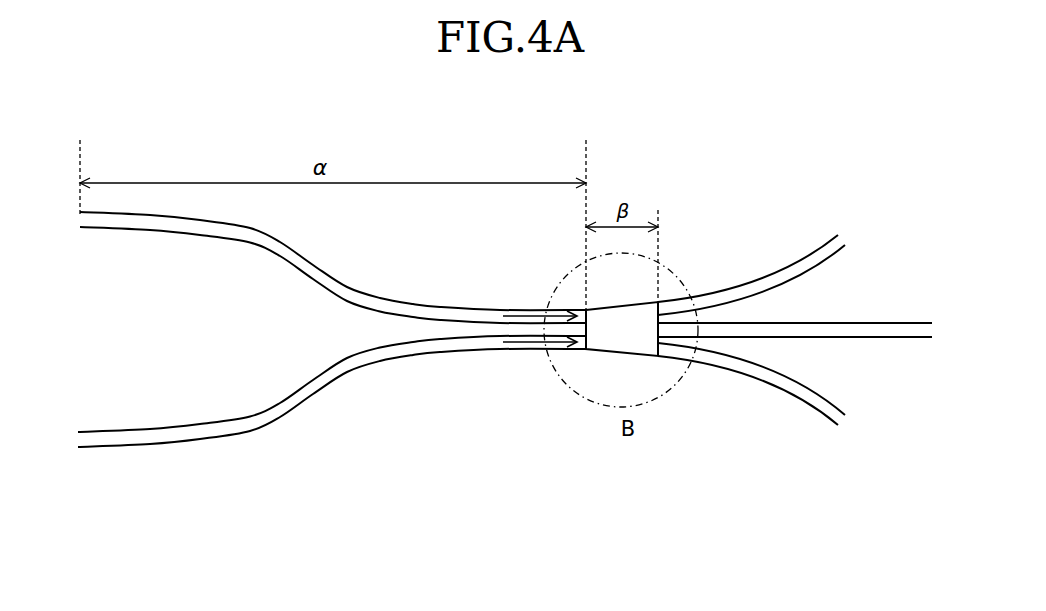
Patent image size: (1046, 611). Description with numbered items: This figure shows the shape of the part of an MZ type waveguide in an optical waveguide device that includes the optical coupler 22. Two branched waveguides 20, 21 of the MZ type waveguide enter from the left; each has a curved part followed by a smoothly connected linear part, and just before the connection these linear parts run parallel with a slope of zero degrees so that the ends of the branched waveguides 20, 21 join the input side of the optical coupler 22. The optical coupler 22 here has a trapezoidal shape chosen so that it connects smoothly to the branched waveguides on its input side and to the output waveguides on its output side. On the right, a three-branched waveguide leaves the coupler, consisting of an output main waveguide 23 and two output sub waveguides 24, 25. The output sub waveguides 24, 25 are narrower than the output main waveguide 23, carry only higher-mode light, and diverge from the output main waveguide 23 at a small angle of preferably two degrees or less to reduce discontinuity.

The branched waveguide 20 is at (398, 307).
The branched waveguide 21 is at (400, 357).
The optical coupler 22 is at (610, 352).
The output main waveguide 23 is at (845, 332).
The output sub waveguide 24 is at (758, 285).
The output sub waveguide 25 is at (762, 382).